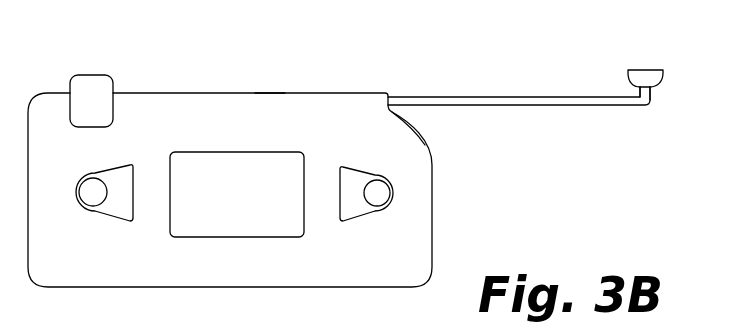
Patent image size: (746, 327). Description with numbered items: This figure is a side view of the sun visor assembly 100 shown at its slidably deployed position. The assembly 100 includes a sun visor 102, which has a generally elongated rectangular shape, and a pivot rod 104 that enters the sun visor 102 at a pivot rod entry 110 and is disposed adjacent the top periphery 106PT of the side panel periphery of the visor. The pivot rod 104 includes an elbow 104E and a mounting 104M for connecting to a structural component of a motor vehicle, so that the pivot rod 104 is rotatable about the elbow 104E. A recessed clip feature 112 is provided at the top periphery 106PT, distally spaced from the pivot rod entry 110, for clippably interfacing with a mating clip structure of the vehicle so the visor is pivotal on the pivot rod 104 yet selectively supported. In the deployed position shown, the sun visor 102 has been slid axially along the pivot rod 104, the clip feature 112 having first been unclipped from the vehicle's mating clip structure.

The sun visor assembly 100 is at (371, 152).
The sun visor 102 is at (160, 90).
The pivot rod 104 is at (530, 108).
The mounting 104M is at (663, 78).
The elbow 104E is at (651, 95).
The top periphery 106PT is at (269, 92).
The pivot rod entry 110 is at (401, 113).
The recessed clip feature 112 is at (88, 73).